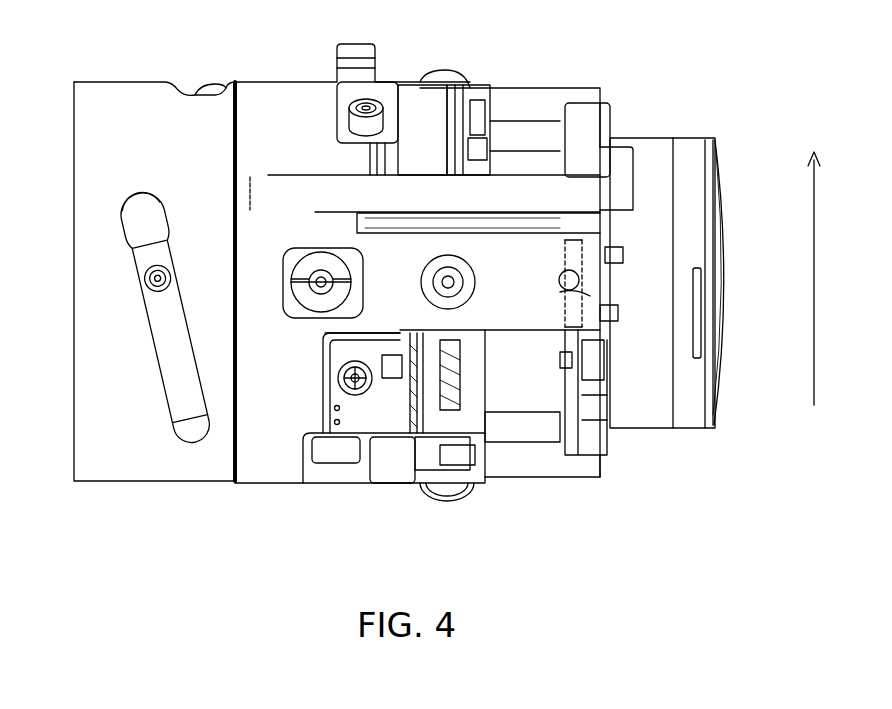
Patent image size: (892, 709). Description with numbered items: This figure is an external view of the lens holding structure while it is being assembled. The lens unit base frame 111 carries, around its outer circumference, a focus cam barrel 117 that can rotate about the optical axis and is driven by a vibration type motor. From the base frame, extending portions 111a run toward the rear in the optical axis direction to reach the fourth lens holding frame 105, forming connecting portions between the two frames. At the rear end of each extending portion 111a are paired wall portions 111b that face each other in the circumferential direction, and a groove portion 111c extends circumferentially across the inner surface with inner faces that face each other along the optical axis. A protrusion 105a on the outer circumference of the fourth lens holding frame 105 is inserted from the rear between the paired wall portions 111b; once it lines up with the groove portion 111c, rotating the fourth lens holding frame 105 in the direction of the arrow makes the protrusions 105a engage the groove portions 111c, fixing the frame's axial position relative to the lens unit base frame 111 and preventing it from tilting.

The focus cam barrel 117 is at (202, 173).
The lens unit base frame 111 is at (288, 367).
The extending portions 111a is at (517, 290).
The paired wall portions 111b is at (618, 255).
The groove portion 111c is at (572, 262).
The fourth lens holding frame 105 is at (688, 155).
The protrusions 105a is at (603, 282).